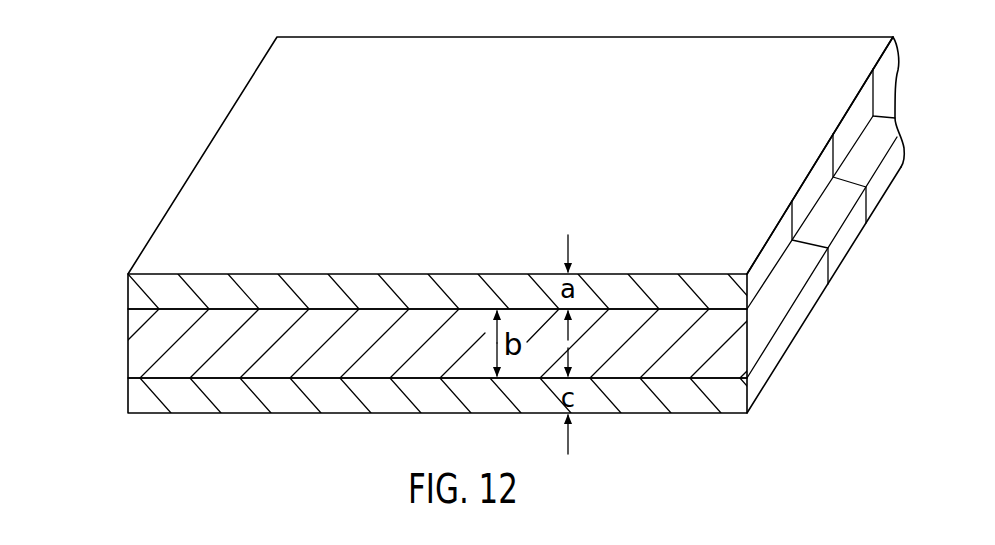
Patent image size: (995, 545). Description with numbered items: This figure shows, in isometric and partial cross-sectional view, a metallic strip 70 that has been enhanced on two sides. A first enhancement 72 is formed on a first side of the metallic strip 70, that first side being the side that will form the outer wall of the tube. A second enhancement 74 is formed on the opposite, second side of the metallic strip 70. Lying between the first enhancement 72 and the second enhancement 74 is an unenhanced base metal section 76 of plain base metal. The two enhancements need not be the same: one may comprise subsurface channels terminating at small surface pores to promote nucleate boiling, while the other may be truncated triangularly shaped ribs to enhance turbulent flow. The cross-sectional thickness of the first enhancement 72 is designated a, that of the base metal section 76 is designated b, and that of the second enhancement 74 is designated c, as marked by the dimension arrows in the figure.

The metallic strip 70 is at (231, 51).
The first enhancement 72 is at (139, 289).
The unenhanced base metal section 76 is at (138, 344).
The second enhancement 74 is at (139, 397).